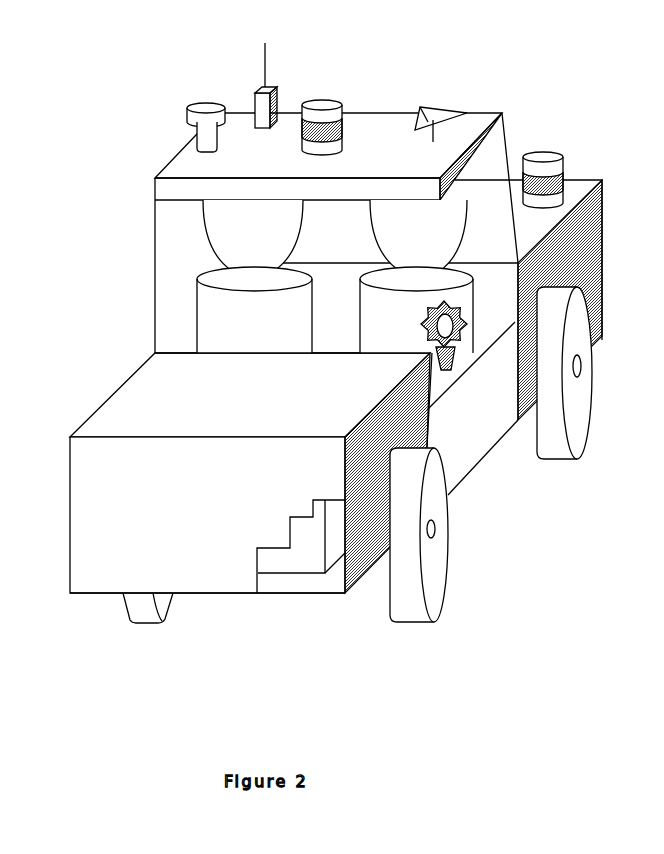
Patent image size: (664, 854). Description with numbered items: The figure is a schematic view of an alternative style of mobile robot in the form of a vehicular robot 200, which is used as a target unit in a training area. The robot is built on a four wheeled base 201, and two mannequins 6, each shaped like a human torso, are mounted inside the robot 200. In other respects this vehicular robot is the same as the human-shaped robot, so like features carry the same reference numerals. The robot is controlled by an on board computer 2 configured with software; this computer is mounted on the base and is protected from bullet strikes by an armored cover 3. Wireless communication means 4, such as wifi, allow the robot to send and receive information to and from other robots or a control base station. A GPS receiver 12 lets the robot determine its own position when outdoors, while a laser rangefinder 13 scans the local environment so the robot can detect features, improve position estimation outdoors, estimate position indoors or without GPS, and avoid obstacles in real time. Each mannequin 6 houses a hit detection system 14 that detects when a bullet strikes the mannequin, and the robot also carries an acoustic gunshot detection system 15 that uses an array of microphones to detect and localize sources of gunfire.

The vehicular robot 200 is at (553, 83).
The on board computer 2 is at (293, 553).
The armored cover 3 is at (130, 518).
The wireless communication means 4 is at (262, 72).
The mannequin 6 is at (225, 330).
The GPS receiver 12 is at (197, 133).
The laser rangefinder 13 is at (350, 127).
The hit detection system 14 is at (458, 337).
The acoustic gunshot detection system 15 is at (453, 108).
The four wheeled base 201 is at (322, 593).